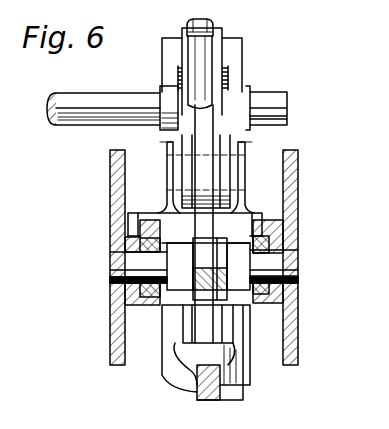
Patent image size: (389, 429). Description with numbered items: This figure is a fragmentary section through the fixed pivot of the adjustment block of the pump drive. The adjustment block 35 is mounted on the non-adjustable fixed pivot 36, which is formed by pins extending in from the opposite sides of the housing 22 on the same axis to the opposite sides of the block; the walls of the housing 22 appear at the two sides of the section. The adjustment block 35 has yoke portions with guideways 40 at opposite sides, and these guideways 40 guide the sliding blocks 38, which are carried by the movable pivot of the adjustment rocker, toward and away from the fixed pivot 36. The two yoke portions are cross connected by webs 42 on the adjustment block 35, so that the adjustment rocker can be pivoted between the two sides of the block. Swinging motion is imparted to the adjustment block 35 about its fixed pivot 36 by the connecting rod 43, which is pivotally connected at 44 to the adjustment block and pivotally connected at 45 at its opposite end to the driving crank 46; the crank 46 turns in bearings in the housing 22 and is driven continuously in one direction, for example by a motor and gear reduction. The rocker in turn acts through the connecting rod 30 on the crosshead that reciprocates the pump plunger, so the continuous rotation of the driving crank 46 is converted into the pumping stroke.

The housing 22 is at (110, 351).
The connecting rod 30 is at (222, 398).
The adjustment block 35 is at (247, 142).
The fixed pivot 36 is at (130, 262).
The sliding blocks 38 is at (127, 288).
The guideways 40 is at (275, 228).
The webs 42 is at (212, 220).
The connecting rod 43 is at (205, 117).
The pivotal connection 44 is at (168, 146).
The pivotal connection 45 is at (225, 52).
The driving crank 46 is at (235, 80).